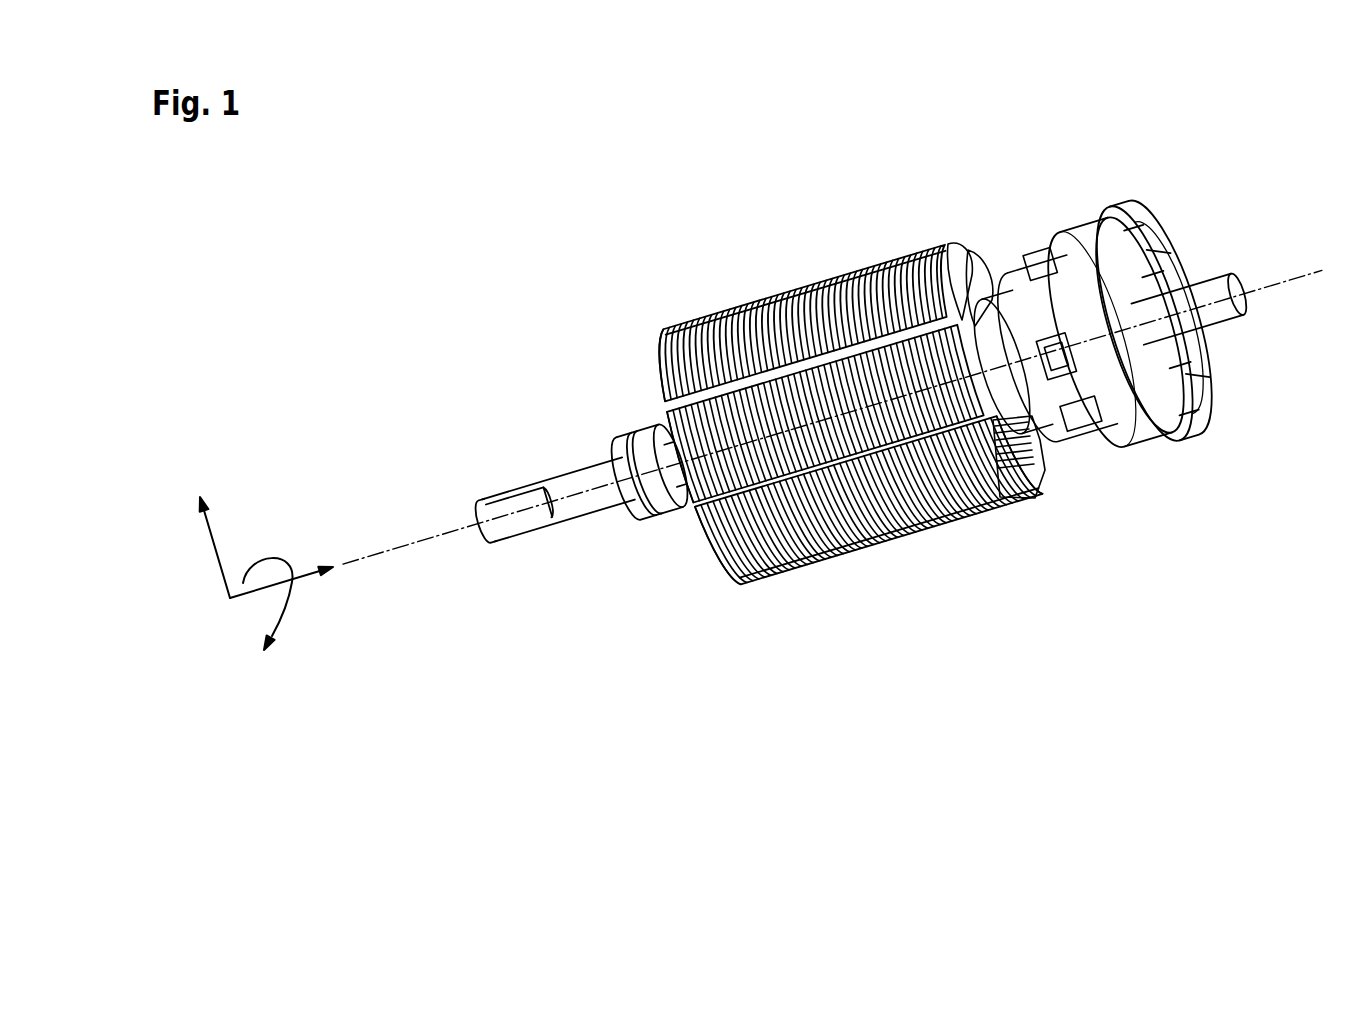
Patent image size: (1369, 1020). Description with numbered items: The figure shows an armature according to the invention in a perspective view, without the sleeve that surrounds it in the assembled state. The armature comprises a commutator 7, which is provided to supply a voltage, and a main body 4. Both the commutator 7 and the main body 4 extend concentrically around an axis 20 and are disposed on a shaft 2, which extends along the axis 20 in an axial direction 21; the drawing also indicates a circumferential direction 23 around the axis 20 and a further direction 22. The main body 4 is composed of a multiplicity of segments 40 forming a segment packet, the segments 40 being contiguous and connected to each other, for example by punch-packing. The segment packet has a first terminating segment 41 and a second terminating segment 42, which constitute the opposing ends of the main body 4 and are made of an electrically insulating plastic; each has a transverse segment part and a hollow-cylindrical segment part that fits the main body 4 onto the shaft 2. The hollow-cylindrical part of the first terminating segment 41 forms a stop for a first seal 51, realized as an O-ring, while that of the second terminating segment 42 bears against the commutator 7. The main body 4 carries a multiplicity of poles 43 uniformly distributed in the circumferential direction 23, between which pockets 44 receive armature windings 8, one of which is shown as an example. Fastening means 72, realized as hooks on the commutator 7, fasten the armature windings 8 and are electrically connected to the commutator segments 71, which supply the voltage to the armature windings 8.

The shaft 2 is at (573, 480).
The axis 20 is at (424, 535).
The axial direction 21 is at (296, 582).
The radial direction 22 is at (213, 555).
The circumferential direction 23 is at (288, 555).
The main body 4 is at (1091, 520).
The segments 40 is at (846, 330).
The first terminating segment 41 is at (663, 365).
The second terminating segment 42 is at (935, 285).
The poles 43 is at (941, 305).
The pockets 44 is at (1005, 310).
The first seal 51 is at (622, 435).
The commutator 7 is at (1195, 485).
The commutator segments 71 is at (1107, 272).
The fastening means 72 is at (1037, 283).
The armature windings 8 is at (1033, 448).